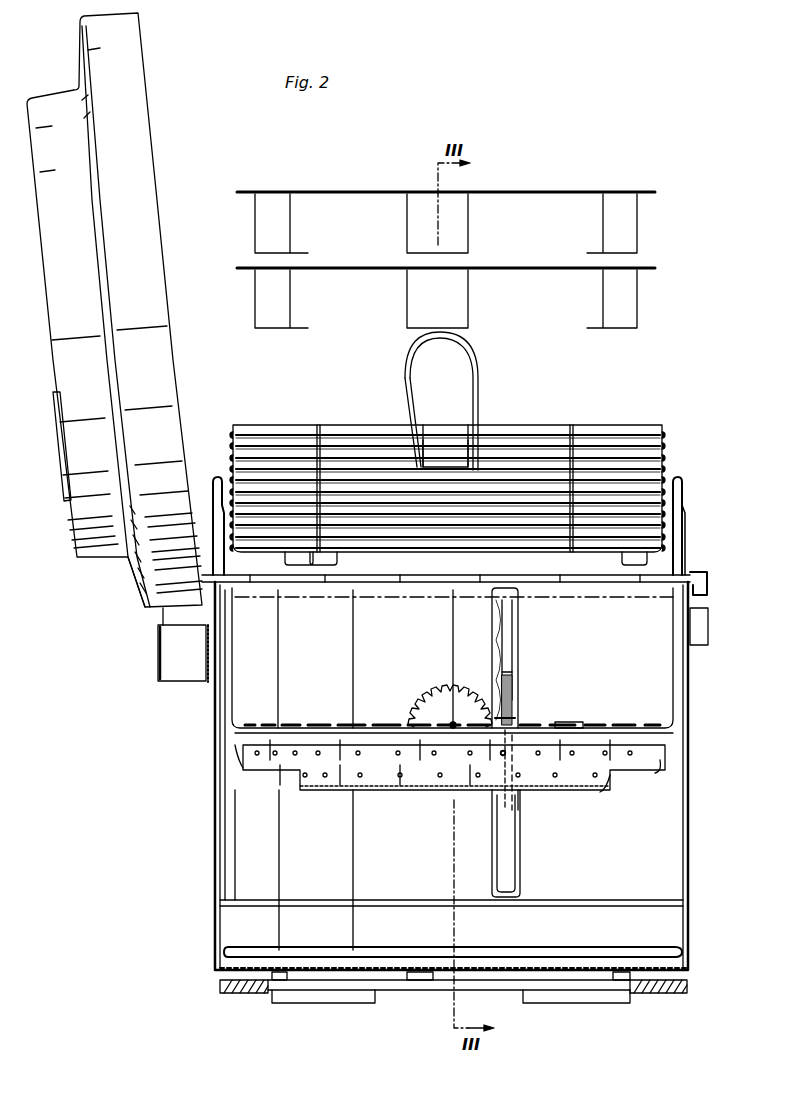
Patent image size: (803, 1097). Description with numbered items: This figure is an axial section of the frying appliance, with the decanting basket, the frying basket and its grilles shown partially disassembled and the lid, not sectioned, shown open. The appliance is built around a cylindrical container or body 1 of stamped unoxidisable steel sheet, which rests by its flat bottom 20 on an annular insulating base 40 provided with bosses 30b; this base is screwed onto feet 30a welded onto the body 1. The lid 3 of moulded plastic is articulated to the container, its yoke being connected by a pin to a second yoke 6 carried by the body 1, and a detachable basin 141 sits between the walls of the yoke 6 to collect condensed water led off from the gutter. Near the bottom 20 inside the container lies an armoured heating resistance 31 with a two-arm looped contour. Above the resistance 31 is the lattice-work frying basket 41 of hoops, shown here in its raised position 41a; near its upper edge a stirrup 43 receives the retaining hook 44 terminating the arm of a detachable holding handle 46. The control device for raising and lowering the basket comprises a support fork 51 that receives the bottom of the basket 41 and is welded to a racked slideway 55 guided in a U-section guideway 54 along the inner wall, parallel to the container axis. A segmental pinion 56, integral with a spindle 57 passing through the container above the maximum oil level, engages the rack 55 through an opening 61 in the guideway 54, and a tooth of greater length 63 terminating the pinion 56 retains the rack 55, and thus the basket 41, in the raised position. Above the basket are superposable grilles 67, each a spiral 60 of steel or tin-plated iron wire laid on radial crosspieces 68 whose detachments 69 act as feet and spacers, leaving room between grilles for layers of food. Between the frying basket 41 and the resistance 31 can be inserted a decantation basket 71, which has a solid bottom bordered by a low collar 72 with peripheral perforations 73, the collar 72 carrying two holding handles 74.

The container 1 is at (688, 795).
The lid 3 is at (103, 553).
The second yoke 6 is at (160, 618).
The bottom 20 is at (348, 975).
The feet 30a is at (420, 982).
The bosses 30b is at (276, 982).
The heating resistance 31 is at (593, 955).
The annular insulating base 40 is at (222, 990).
The frying basket 41 is at (588, 453).
The raised position of the frying basket 41a is at (250, 661).
The stirrup 43 is at (437, 430).
The retaining hook 44 is at (441, 462).
The detachable holding handle 46 is at (478, 358).
The support fork 51 is at (262, 724).
The guideway 54 is at (492, 630).
The racked slideway 55 is at (495, 667).
The segmental pinion 56 is at (430, 716).
The spindle 57 is at (452, 722).
The spiral 60 is at (446, 195).
The opening 61 is at (500, 760).
The tooth of greater length 63 is at (512, 718).
The grilles 67 is at (635, 188).
The radial crosspieces 68 is at (550, 196).
The detachments 69 is at (605, 250).
The decantation basket 71 is at (512, 786).
The collar 72 is at (531, 727).
The perforations 73 is at (402, 778).
The holding handles 74 is at (215, 515).
The basin 141 is at (158, 680).